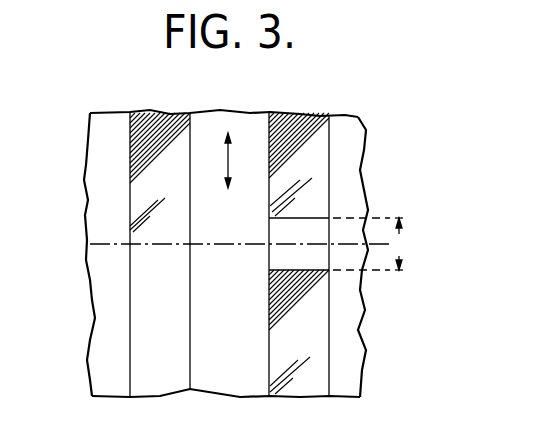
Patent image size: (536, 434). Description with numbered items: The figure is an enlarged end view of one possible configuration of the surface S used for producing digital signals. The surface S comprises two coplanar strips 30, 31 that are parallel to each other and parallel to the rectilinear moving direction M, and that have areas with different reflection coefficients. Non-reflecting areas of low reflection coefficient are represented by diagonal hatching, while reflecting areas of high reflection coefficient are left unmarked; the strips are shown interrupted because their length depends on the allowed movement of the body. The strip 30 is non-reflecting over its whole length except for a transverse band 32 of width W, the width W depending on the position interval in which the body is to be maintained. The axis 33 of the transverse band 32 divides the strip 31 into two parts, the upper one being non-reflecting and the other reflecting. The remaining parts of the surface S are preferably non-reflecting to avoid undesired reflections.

The surface S is at (102, 118).
The strip 30 is at (283, 113).
The strip 31 is at (176, 118).
The transverse band 32 is at (318, 230).
The axis 33 is at (241, 246).
The rectilinear moving direction M is at (237, 160).
The width W is at (401, 244).